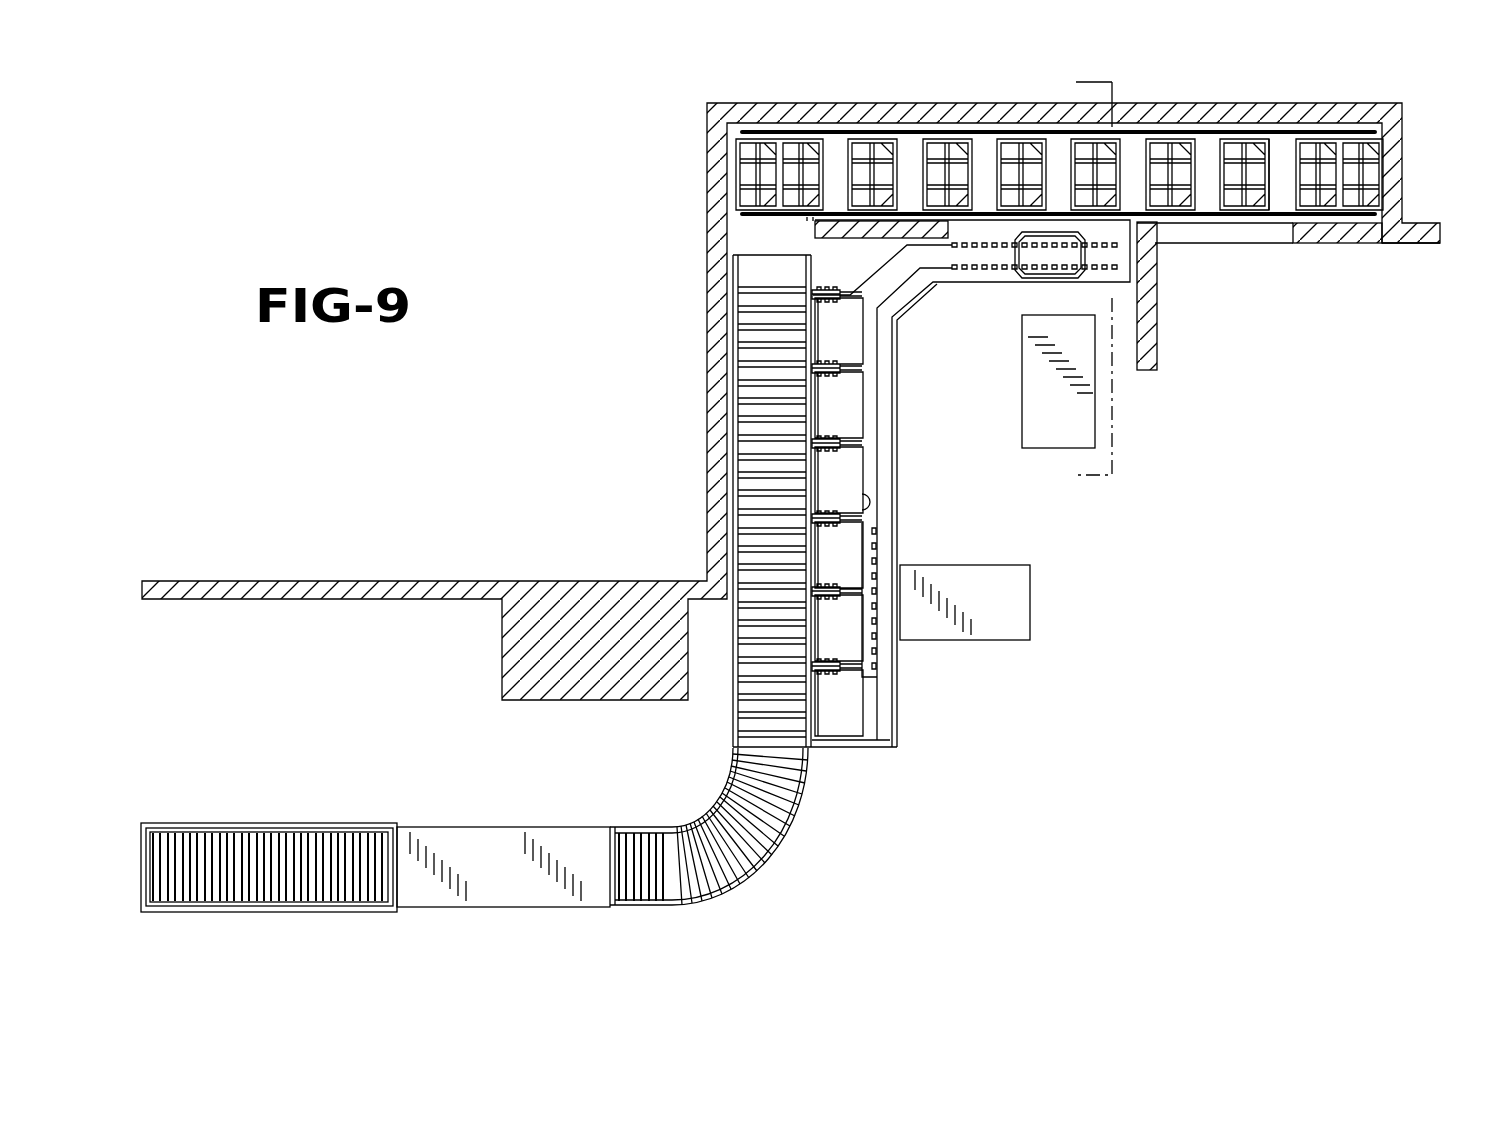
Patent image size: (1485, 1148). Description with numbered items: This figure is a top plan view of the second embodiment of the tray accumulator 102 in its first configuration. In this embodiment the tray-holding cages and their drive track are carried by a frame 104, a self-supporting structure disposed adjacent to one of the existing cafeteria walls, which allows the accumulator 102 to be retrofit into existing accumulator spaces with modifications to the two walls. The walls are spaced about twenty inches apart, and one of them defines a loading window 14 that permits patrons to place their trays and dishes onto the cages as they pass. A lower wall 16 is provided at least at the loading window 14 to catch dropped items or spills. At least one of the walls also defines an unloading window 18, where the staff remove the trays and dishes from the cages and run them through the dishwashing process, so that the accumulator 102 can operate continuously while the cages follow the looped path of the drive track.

The loading window 14 is at (1192, 234).
The lower wall 16 is at (1287, 192).
The unloading window 18 is at (990, 232).
The tray accumulator 102 is at (1378, 262).
The frame 104 is at (1238, 245).